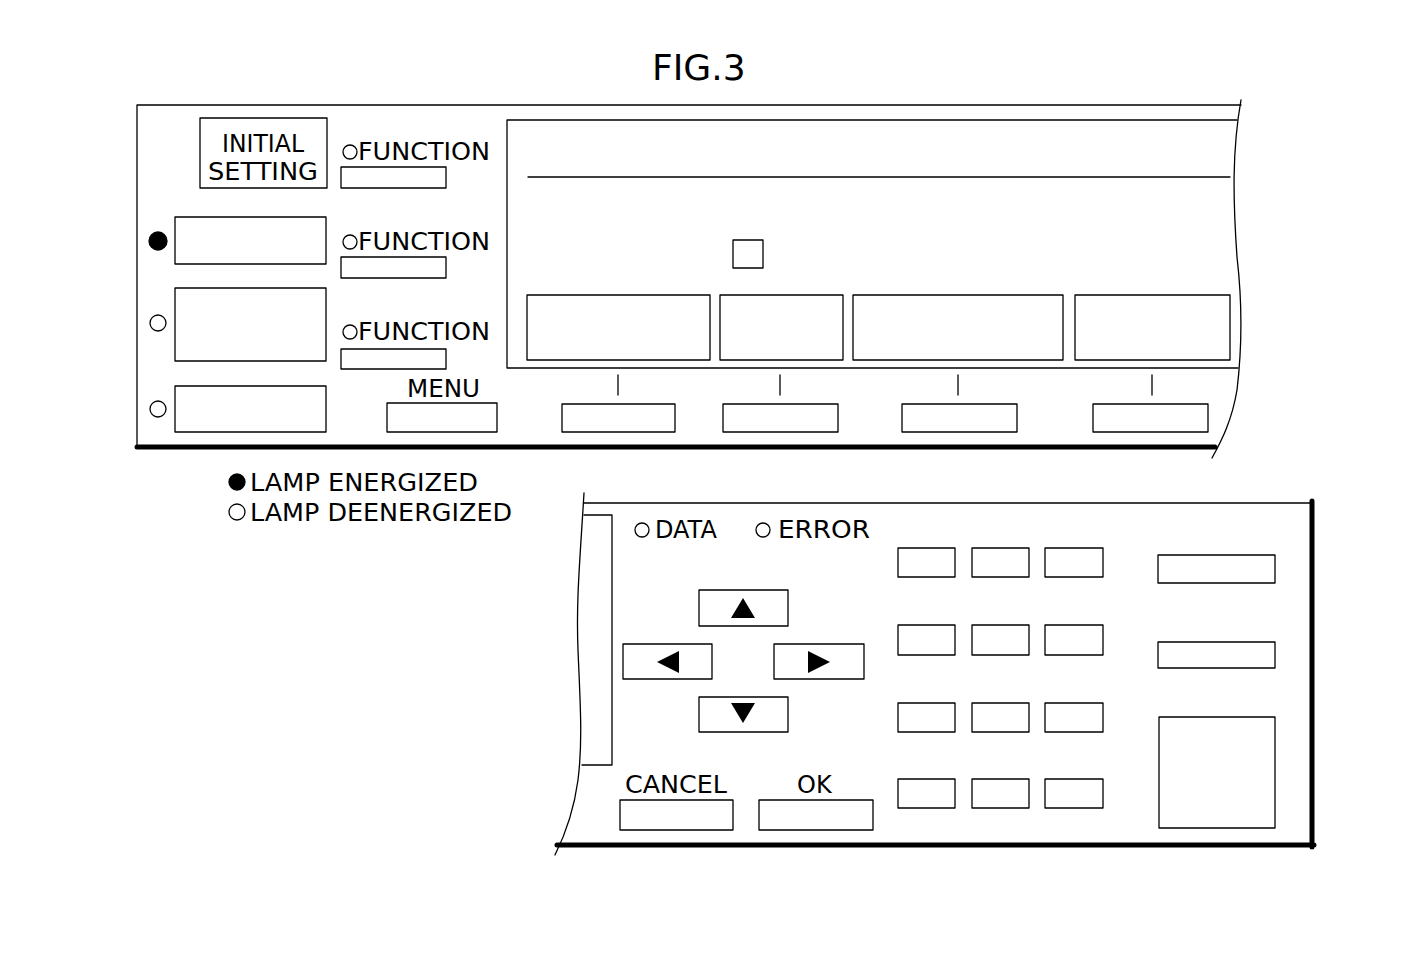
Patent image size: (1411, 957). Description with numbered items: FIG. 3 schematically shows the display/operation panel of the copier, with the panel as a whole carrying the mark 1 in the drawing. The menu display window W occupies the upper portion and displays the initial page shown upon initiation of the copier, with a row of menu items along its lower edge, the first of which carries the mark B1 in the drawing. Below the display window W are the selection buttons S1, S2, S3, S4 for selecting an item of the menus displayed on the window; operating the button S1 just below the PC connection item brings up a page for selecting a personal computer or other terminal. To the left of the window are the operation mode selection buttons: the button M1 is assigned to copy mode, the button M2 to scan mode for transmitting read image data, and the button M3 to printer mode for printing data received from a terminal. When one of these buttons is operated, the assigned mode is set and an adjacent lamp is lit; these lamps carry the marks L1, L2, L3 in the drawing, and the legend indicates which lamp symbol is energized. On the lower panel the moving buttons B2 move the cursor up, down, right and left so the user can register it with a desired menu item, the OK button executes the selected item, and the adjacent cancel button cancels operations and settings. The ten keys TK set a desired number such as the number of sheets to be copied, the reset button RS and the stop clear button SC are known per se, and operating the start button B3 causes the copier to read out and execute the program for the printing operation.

The operation panel 1 is at (692, 279).
The menu display window W is at (552, 119).
The display function buttons B1 is at (618, 294).
The moving buttons B2 is at (784, 579).
The start button B3 is at (1275, 768).
The selection button S1 is at (612, 432).
The selection button S2 is at (782, 432).
The selection button S3 is at (947, 432).
The selection button S4 is at (1208, 416).
The copy mode button M1 is at (326, 218).
The scan mode button M2 is at (326, 302).
The printer mode button M3 is at (326, 393).
The copy mode lamp L1 is at (148, 241).
The fax/scanner mode lamp L2 is at (149, 323).
The printer mode lamp L3 is at (149, 409).
The reset key RS is at (1275, 568).
The stop clear button SC is at (1275, 655).
The ten keys TK is at (976, 833).